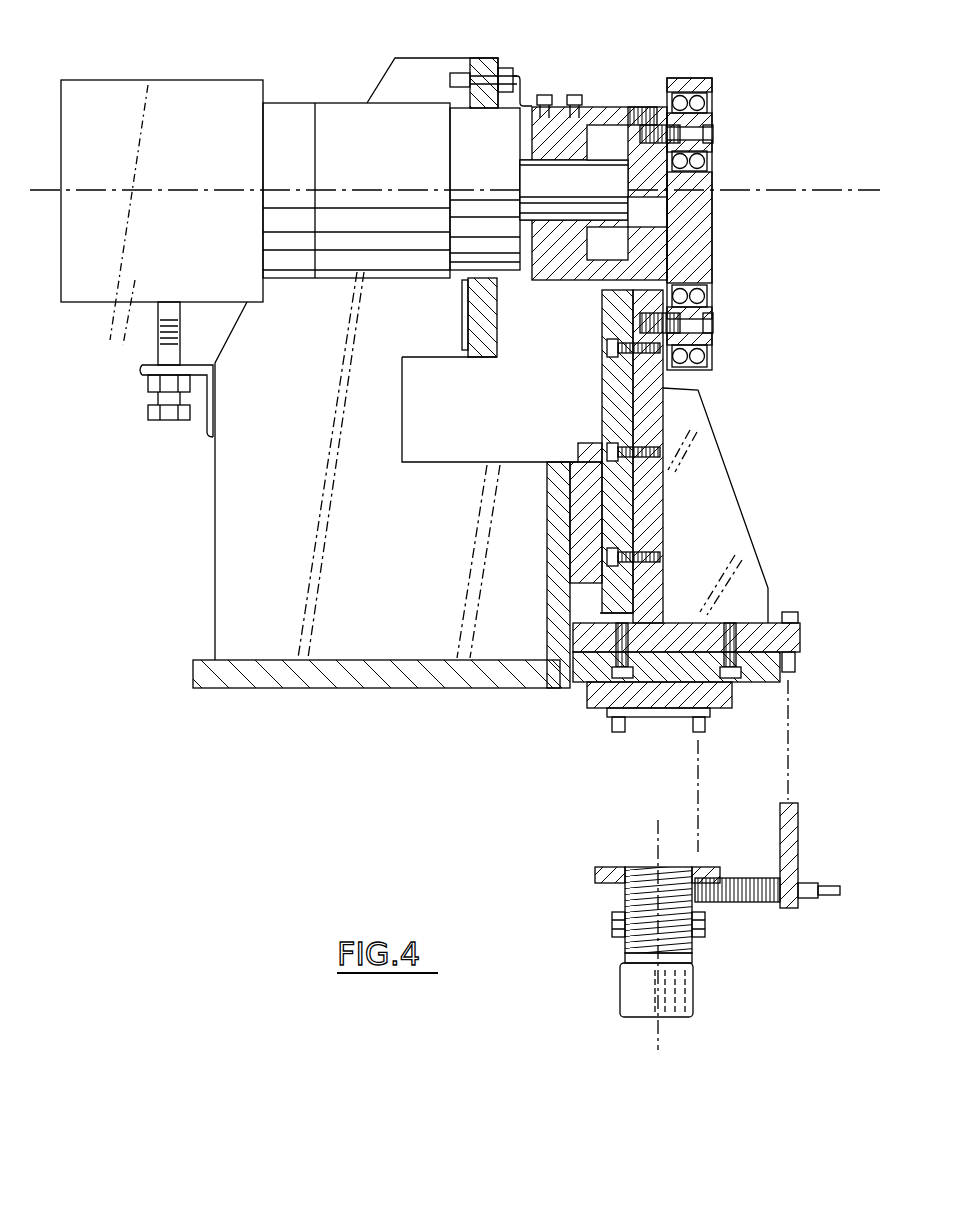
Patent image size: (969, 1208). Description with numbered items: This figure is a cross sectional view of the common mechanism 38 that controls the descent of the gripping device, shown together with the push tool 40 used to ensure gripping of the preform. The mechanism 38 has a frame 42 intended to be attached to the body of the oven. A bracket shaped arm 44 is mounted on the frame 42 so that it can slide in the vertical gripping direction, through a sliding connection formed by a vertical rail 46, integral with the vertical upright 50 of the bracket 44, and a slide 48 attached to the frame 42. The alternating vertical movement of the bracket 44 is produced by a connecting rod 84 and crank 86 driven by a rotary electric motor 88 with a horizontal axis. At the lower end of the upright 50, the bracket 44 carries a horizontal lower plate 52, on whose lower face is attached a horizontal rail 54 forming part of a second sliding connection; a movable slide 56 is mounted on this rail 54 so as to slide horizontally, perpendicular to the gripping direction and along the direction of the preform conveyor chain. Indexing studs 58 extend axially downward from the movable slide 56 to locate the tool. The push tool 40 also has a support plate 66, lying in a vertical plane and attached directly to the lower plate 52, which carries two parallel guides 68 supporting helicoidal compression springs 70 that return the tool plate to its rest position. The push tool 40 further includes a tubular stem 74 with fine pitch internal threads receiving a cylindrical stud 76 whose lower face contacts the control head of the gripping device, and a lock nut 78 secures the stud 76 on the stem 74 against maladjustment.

The common mechanism 38 is at (188, 531).
The push tool 40 is at (692, 915).
The frame 42 is at (317, 692).
The bracket shaped arm 44 is at (745, 484).
The vertical rail 46 is at (610, 382).
The slide 48 is at (580, 453).
The vertical upright 50 is at (650, 415).
The horizontal lower plate 52 is at (752, 622).
The horizontal rail 54 is at (682, 622).
The movable slide 56 is at (662, 703).
The indexing studs 58 is at (705, 723).
The support plate 66 is at (793, 833).
The guides 68 is at (752, 903).
The helicoidal compression springs 70 is at (736, 877).
The tubular stem 74 is at (627, 893).
The cylindrical stud 76 is at (680, 990).
The lock nut 78 is at (615, 930).
The connecting rod 84 is at (700, 232).
The crank 86 is at (622, 105).
The rotary electric motor 88 is at (338, 118).